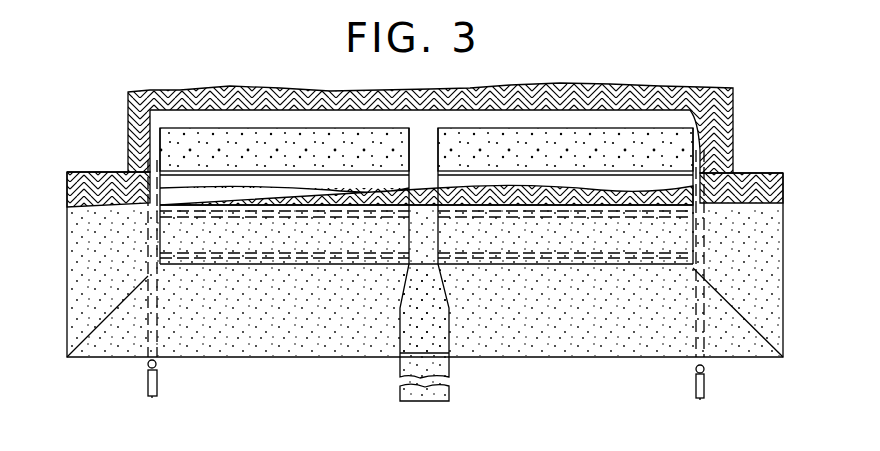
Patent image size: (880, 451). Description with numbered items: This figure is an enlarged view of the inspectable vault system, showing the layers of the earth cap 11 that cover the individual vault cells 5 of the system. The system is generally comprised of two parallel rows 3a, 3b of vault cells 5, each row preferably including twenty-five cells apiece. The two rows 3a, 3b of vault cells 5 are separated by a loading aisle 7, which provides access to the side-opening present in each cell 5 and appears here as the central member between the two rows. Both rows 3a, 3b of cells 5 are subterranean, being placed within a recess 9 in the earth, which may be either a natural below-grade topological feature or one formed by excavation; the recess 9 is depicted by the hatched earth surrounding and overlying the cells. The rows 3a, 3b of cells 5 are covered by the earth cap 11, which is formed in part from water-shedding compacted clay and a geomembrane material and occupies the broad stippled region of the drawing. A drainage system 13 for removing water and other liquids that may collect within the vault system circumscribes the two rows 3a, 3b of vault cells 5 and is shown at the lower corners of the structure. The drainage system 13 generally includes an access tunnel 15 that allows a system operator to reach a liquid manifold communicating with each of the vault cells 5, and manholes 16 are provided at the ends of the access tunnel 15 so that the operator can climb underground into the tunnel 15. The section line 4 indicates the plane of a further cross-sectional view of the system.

The row of vault cells 3a is at (271, 78).
The row of vault cells 3b is at (572, 75).
The section line 4- 4 is at (170, 237).
The vault cell 5 is at (172, 142).
The loading aisle 7 is at (426, 330).
The recess 9 is at (640, 105).
The earth cap 11 is at (425, 264).
The drainage system 13 is at (150, 401).
The access tunnel 15 is at (158, 374).
The manhole 16 is at (148, 366).